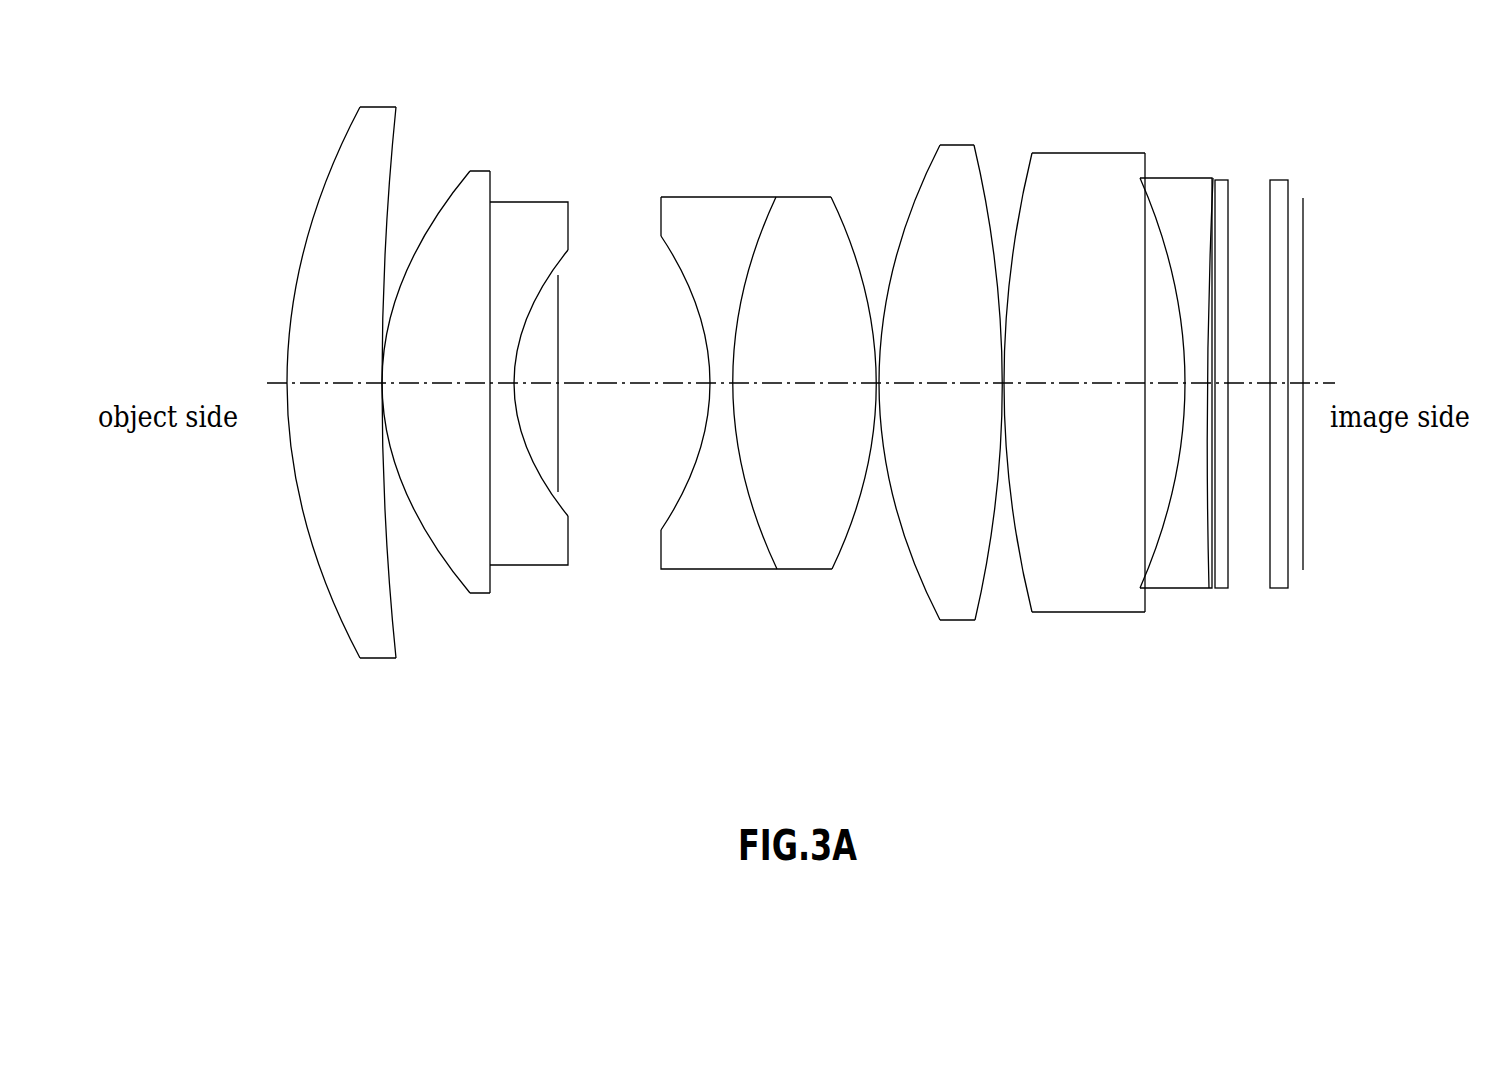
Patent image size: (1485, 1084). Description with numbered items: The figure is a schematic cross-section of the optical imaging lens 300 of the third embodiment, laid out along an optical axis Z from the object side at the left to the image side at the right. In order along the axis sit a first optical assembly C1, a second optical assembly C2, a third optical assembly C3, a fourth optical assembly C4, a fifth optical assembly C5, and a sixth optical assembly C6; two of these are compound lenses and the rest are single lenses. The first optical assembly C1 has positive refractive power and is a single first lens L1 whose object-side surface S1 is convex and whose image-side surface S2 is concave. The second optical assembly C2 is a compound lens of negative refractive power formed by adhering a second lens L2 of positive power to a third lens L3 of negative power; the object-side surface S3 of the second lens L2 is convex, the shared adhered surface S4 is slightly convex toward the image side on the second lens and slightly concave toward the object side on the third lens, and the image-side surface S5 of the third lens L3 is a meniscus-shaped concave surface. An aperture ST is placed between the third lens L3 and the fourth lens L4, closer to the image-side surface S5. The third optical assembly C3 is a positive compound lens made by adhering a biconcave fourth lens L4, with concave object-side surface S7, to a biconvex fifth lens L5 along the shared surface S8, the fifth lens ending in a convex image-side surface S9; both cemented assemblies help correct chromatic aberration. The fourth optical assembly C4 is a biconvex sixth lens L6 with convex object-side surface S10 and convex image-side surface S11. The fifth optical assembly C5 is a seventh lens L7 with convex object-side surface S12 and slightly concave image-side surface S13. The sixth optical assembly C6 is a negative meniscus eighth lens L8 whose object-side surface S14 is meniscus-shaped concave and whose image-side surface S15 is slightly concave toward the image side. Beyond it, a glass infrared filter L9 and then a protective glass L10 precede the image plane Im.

The optical imaging lens 300 is at (276, 260).
The optical axis Z is at (787, 380).
The first optical assembly C1 is at (299, 190).
The second optical assembly C2 is at (522, 168).
The third optical assembly C3 is at (760, 170).
The fourth optical assembly C4 is at (915, 145).
The fifth optical assembly C5 is at (1045, 130).
The sixth optical assembly C6 is at (1165, 150).
The first lens L1 is at (352, 147).
The second lens L2 is at (465, 192).
The third lens L3 is at (555, 208).
The fourth lens L4 is at (695, 210).
The fifth lens L5 is at (798, 210).
The sixth lens L6 is at (952, 162).
The seventh lens L7 is at (1082, 167).
The eighth lens L8 is at (1193, 183).
The infrared filter L9 is at (1222, 195).
The protective glass L10 is at (1280, 202).
The aperture ST is at (560, 300).
The image plane Im is at (1306, 272).
The object-side surface of the first lens S1 is at (323, 577).
The image-side surface of the first lens S2 is at (389, 577).
The object-side surface of the second lens S3 is at (438, 552).
The adhered surface of the second and third lenses S4 is at (493, 506).
The image-side surface of the third lens S5 is at (553, 497).
The object-side surface of the fourth lens S7 is at (678, 505).
The adhered surface of the fourth and fifth lenses S8 is at (753, 512).
The image-side surface of the fifth lens S9 is at (850, 522).
The object-side surface of the sixth lens S10 is at (905, 542).
The image-side surface of the sixth lens S11 is at (980, 580).
The object-side surface of the seventh lens S12 is at (1020, 587).
The image-side surface of the seventh lens S13 is at (1143, 557).
The object-side surface of the eighth lens S14 is at (1165, 477).
The image-side surface of the eighth lens S15 is at (1207, 517).